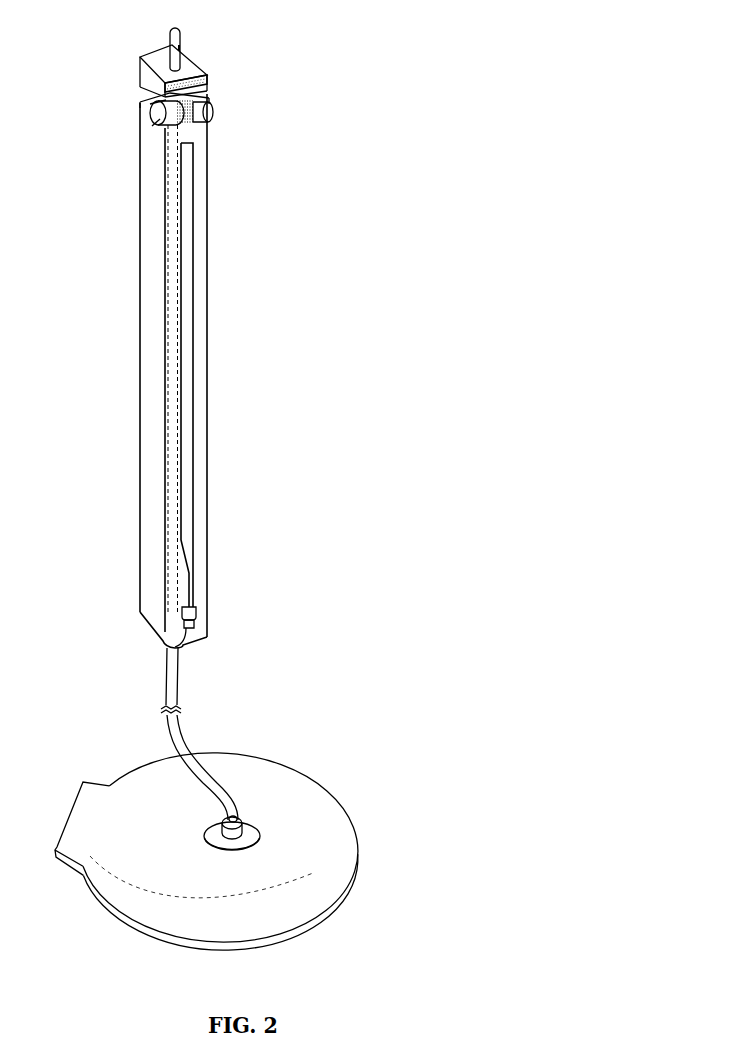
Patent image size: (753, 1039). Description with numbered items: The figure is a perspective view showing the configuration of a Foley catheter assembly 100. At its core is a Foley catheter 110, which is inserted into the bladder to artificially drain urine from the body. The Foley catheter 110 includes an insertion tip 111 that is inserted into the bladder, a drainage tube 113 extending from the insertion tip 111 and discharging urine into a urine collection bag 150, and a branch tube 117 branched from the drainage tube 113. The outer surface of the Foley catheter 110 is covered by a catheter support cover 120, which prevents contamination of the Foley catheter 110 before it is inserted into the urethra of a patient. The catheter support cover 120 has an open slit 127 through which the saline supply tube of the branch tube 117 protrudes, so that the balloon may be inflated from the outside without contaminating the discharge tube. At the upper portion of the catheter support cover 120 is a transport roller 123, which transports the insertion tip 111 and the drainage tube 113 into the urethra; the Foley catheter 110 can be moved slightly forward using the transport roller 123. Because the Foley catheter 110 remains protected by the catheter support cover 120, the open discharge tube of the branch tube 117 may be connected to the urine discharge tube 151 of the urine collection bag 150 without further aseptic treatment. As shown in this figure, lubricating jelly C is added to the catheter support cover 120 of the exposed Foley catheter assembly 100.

The Foley catheter assembly 100 is at (322, 84).
The Foley catheter 110 is at (350, 162).
The insertion tip 111 is at (182, 52).
The drainage tube 113 is at (175, 273).
The branch tube 117 is at (188, 590).
The catheter support cover 120 is at (145, 310).
The transport roller 123 is at (158, 121).
The open slit 127 is at (188, 233).
The urine collection bag 150 is at (338, 817).
The urine discharge tube 151 is at (175, 673).
The lubricating jelly C is at (166, 100).